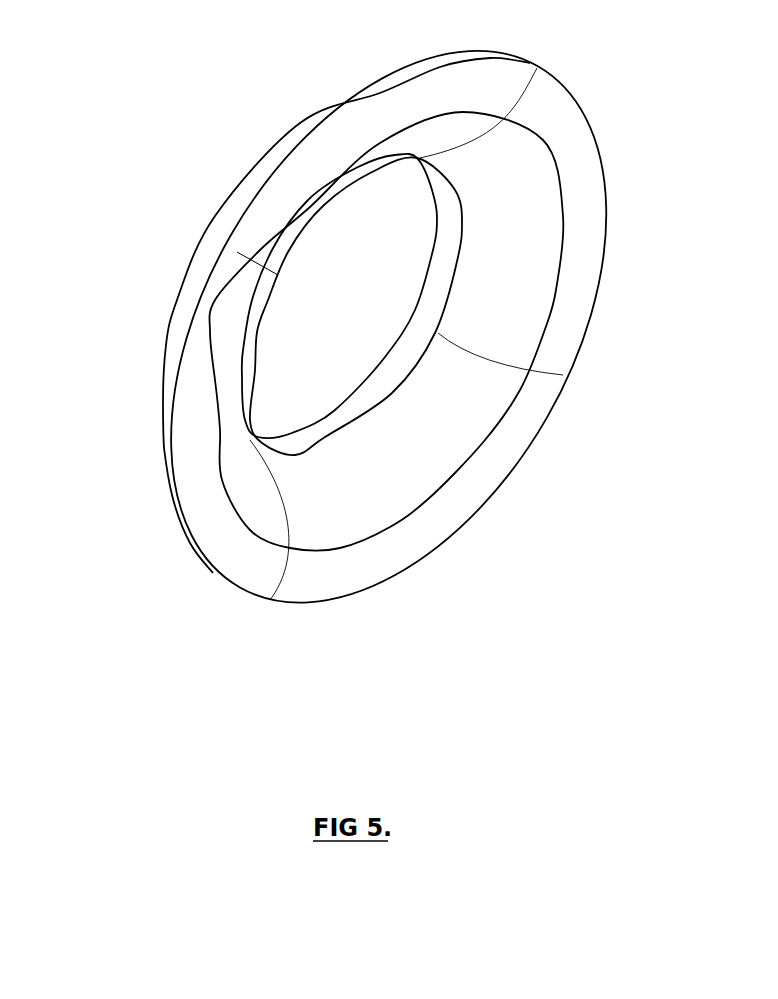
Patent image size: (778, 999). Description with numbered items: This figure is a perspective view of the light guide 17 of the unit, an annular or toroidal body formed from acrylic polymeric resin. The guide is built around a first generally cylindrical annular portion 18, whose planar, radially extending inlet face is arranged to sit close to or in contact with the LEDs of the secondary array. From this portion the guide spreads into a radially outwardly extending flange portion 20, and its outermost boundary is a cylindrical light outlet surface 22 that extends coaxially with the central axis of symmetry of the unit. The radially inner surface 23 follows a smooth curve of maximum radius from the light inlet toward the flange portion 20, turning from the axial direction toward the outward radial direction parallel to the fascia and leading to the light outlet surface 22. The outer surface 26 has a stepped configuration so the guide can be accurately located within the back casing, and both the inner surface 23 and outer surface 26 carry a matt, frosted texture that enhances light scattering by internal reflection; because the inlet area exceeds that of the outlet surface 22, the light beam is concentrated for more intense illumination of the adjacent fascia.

The light guide 17 is at (500, 528).
The first generally cylindrical annular portion 18 is at (418, 333).
The flange portion 20 is at (215, 540).
The light outlet surface 22 is at (175, 408).
The radially inner surface 23 is at (510, 363).
The outer surface 26 is at (280, 155).